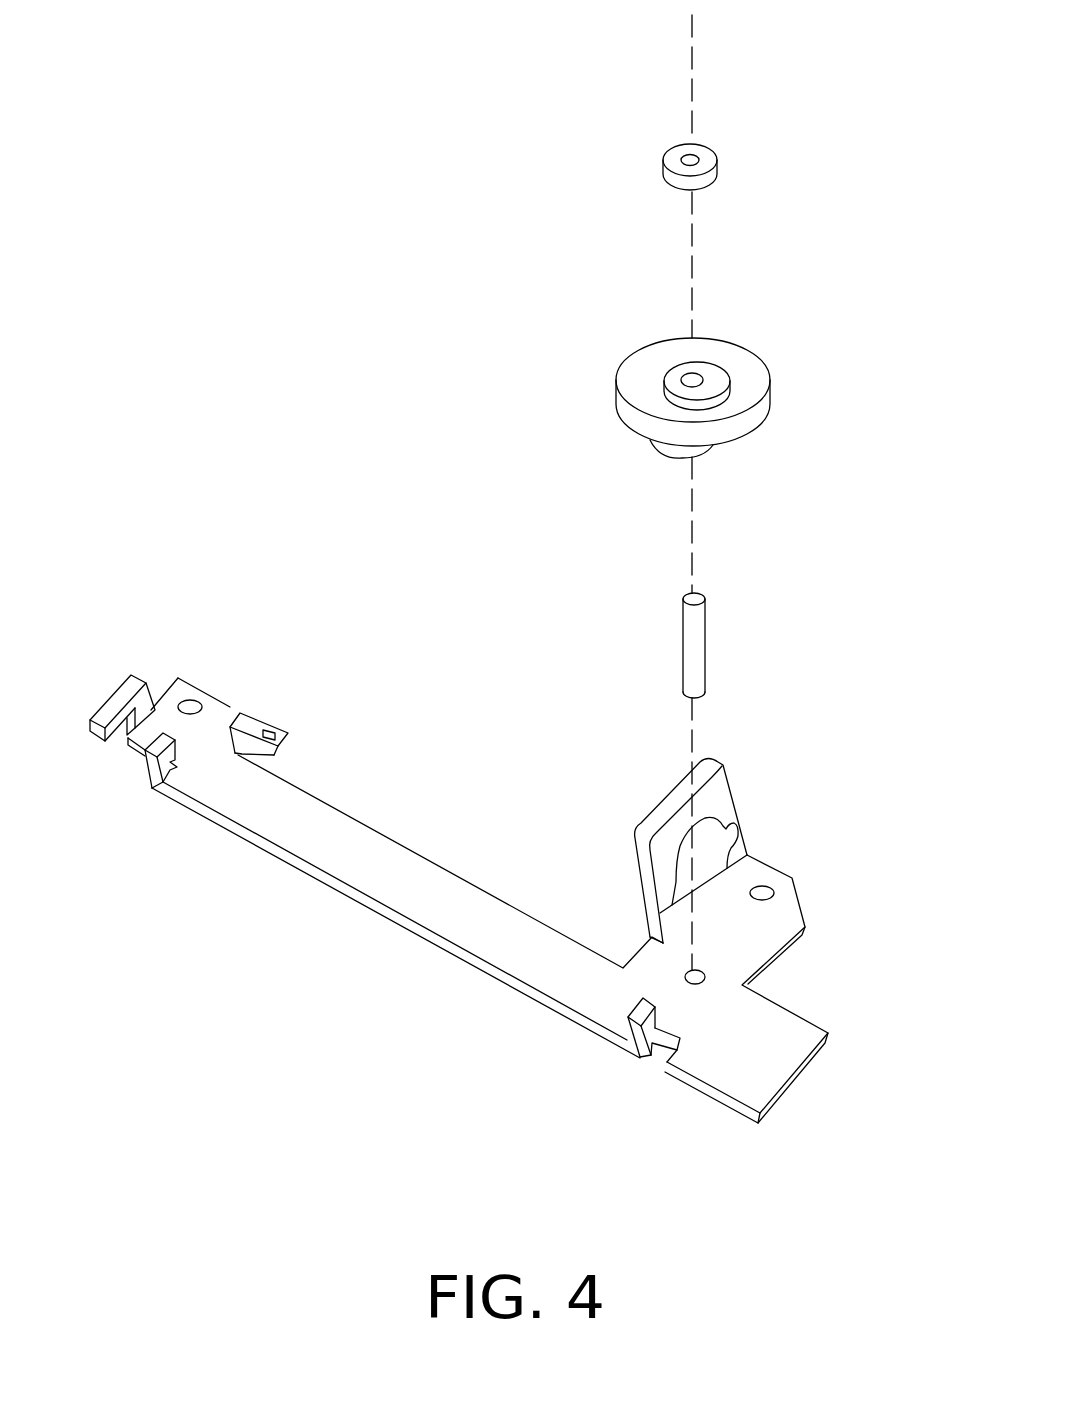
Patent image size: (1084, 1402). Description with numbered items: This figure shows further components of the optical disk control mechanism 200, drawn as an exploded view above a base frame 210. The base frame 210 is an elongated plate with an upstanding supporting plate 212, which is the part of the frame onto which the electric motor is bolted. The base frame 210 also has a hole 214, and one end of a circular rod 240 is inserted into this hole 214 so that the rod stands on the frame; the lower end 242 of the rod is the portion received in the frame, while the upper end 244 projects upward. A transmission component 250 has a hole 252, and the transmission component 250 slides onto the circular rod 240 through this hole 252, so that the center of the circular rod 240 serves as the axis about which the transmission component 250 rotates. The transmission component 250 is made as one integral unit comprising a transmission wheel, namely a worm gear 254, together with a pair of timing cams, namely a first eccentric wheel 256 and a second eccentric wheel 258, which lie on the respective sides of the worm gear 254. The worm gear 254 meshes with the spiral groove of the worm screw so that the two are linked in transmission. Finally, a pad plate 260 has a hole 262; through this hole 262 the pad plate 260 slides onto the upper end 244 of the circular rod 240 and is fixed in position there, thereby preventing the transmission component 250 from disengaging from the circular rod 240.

The optical disk control mechanism 200 is at (333, 1063).
The base frame 210 is at (720, 1078).
The supporting plate 212 is at (727, 793).
The hole 214 is at (707, 973).
The circular rod 240 is at (694, 648).
The first end of shaft 242 is at (708, 692).
The upper end 244 is at (708, 594).
The transmission component 250 is at (778, 382).
The hole 252 is at (725, 363).
The worm gear 254 is at (628, 389).
The first eccentric wheel 256 is at (717, 386).
The second eccentric wheel 258 is at (662, 447).
The pad plate 260 is at (702, 175).
The hole 262 is at (706, 158).